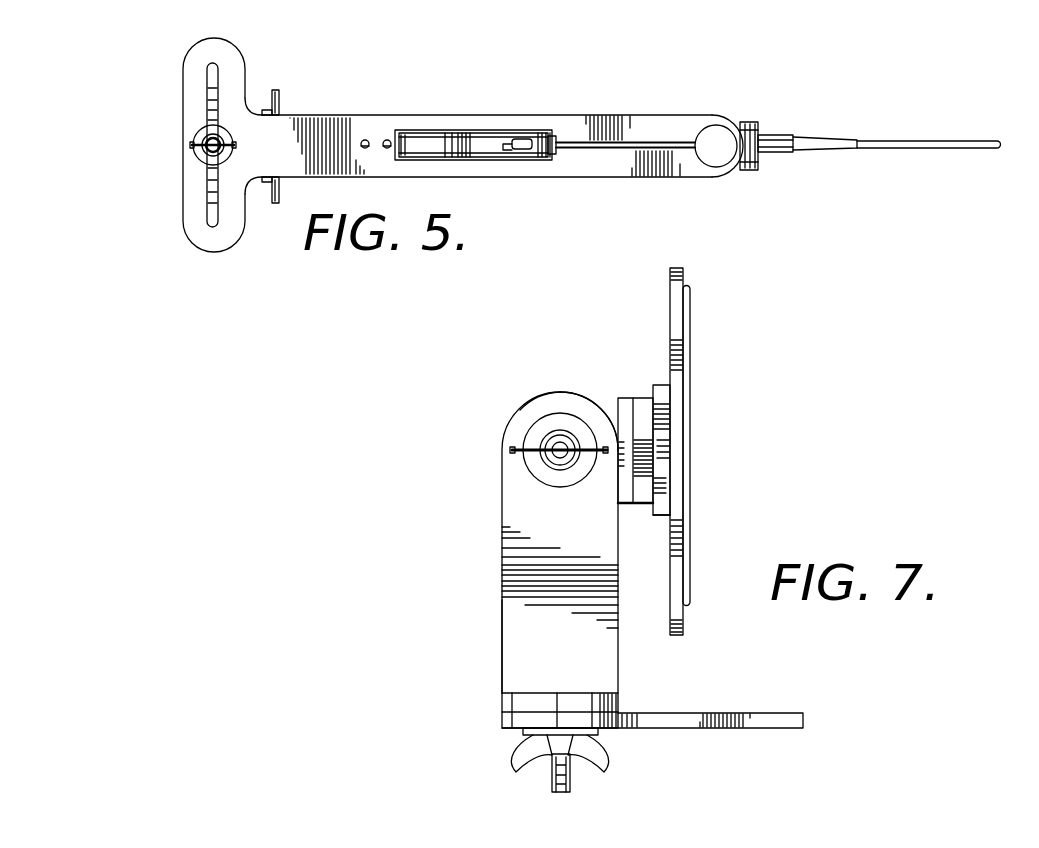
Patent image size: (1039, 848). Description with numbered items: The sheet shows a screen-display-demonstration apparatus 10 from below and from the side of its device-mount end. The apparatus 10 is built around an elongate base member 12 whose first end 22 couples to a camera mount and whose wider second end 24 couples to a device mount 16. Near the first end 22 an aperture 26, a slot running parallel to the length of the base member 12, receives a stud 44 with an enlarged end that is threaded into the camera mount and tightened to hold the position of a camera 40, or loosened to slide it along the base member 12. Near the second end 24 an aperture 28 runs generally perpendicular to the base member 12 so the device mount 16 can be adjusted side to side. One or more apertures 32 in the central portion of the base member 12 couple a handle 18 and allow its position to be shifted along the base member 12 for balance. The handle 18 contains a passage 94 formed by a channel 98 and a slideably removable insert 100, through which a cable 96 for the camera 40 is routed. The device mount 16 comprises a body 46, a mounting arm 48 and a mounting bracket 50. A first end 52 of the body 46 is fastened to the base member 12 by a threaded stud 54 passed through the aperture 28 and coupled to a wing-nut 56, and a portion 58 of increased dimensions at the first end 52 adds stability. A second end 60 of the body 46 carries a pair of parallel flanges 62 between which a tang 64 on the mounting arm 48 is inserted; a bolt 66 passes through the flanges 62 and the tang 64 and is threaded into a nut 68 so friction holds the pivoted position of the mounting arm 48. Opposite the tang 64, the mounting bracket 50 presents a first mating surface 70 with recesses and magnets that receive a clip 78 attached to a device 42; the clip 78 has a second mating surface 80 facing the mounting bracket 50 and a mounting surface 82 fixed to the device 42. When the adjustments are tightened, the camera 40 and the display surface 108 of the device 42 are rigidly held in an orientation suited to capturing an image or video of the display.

In FIG. 5, the screen-display-demonstration apparatus 10 is at (481, 40).
In FIG. 7, the screen-display-demonstration apparatus 10 is at (450, 516).
In FIG. 5, the base member 12 is at (628, 116).
In FIG. 7, the base member 12 is at (776, 712).
In FIG. 7, the device mount 16 is at (500, 616).
In FIG. 5, the handle 18 is at (425, 130).
In FIG. 5, the first end 22 is at (721, 120).
In FIG. 5, the second end 24 is at (190, 54).
In FIG. 5, the aperture 26 is at (630, 150).
In FIG. 5, the aperture 28 is at (210, 77).
In FIG. 5, the apertures 32 is at (388, 139).
In FIG. 5, the camera 40 is at (760, 128).
In FIG. 5, the device 42 is at (278, 92).
In FIG. 7, the device 42 is at (682, 268).
In FIG. 5, the stud 44 is at (720, 167).
In FIG. 7, the body 46 is at (500, 652).
In FIG. 7, the mounting arm 48 is at (620, 397).
In FIG. 7, the mounting bracket 50 is at (640, 396).
In FIG. 7, the first end 52 is at (499, 702).
In FIG. 5, the threaded stud 54 is at (213, 154).
In FIG. 7, the threaded stud 54 is at (562, 793).
In FIG. 5, the wing-nut 56 is at (194, 141).
In FIG. 7, the wing-nut 56 is at (601, 766).
In FIG. 7, the portion of increased dimensions 58 is at (619, 712).
In FIG. 7, the second end 60 is at (521, 398).
In FIG. 7, the parallel flanges 62 is at (515, 426).
In FIG. 7, the tang 64 is at (600, 392).
In FIG. 7, the bolt 66 is at (557, 462).
In FIG. 7, the nut 68 is at (515, 455).
In FIG. 7, the first mating surface 70 is at (662, 485).
In FIG. 7, the clip 78 is at (662, 518).
In FIG. 7, the second mating surface 80 is at (655, 425).
In FIG. 7, the mounting surface 82 is at (665, 450).
In FIG. 5, the passage 94 is at (508, 161).
In FIG. 5, the cable 96 is at (935, 142).
In FIG. 5, the channel 98 is at (527, 138).
In FIG. 5, the insert 100 is at (558, 137).
In FIG. 7, the display surface 108 is at (690, 365).